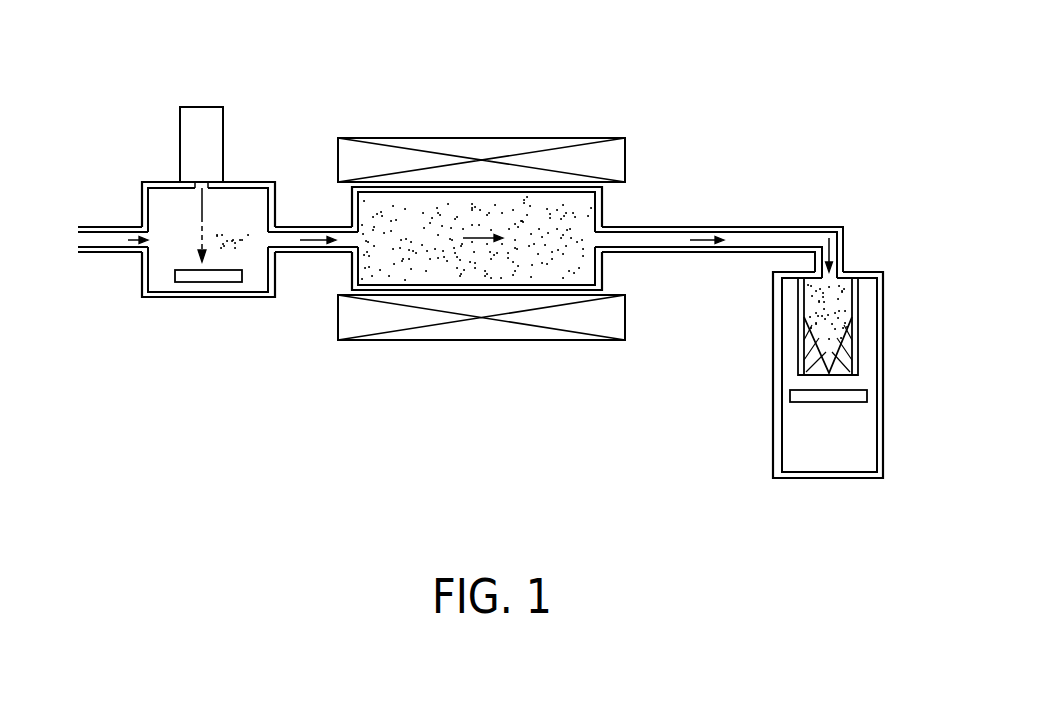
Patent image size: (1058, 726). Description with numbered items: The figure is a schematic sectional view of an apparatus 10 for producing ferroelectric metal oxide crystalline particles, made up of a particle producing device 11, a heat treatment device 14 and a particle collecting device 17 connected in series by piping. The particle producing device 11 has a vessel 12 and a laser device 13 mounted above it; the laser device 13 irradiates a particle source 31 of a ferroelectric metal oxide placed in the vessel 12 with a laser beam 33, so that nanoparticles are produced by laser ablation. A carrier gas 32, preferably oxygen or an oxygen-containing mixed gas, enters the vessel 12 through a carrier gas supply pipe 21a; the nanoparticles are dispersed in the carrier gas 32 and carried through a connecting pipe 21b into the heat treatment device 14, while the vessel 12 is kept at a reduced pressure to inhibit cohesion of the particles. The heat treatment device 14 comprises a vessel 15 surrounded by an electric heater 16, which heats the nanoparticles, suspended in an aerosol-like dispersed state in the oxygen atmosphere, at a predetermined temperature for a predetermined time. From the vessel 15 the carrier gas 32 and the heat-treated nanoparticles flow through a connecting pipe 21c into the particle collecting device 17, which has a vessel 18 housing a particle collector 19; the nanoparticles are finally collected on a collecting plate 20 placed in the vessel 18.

The apparatus 10 is at (531, 76).
The particle producing device 11 is at (233, 216).
The vessel 12 is at (274, 181).
The laser device 13 is at (222, 130).
The heat treatment device 14 is at (515, 201).
The vessel 15 is at (605, 210).
The electric heater 16 is at (623, 160).
The particle collecting device 17 is at (866, 367).
The vessel 18 is at (887, 427).
The particle collector 19 is at (848, 350).
The collecting plate 20 is at (863, 388).
The carrier gas supply pipe 21a is at (108, 227).
The connecting pipe 21b is at (302, 253).
The connecting pipe 21c is at (735, 225).
The particle source 31 is at (212, 282).
The carrier gas 32 is at (80, 238).
The laser beam 33 is at (202, 221).